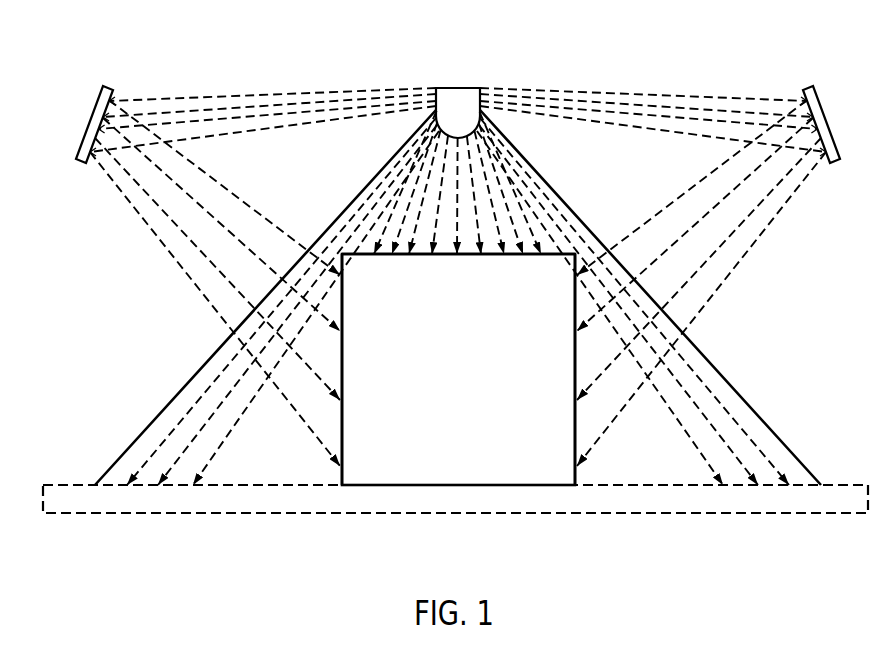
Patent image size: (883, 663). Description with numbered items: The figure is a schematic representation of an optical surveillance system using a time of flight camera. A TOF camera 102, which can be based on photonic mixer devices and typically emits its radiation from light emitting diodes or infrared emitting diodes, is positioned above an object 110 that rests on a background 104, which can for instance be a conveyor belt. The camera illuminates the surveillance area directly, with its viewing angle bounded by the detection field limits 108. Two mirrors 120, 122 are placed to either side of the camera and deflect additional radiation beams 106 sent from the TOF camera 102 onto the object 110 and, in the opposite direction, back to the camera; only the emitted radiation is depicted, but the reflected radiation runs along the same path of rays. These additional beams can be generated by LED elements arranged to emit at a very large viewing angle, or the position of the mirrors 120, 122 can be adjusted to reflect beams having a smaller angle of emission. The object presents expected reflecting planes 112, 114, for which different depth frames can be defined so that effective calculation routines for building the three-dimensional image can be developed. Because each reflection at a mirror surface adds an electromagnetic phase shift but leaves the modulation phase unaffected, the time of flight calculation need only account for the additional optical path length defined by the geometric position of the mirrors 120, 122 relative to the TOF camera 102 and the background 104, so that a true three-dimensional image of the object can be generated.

The TOF camera 102 is at (459, 84).
The background 104 is at (822, 516).
The radiation 106 is at (468, 193).
The detection field limits 108 is at (140, 432).
The object 110 is at (403, 425).
The reflecting plane of the object 112 is at (420, 256).
The reflecting plane of the object 114 is at (338, 357).
The mirror 120 is at (812, 83).
The mirror 122 is at (103, 83).